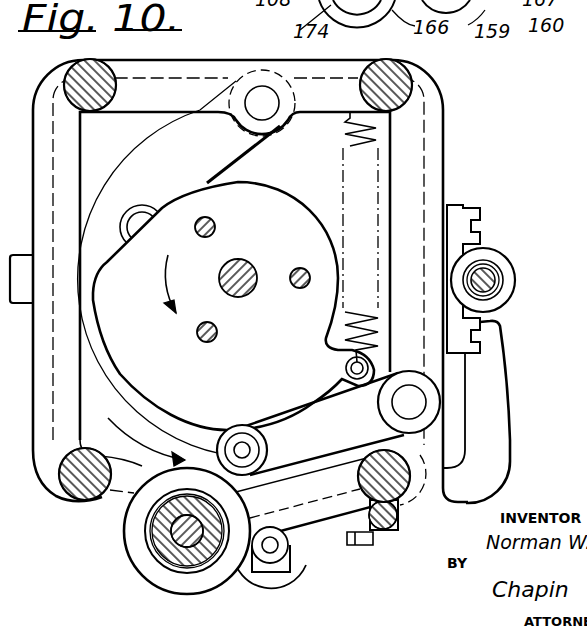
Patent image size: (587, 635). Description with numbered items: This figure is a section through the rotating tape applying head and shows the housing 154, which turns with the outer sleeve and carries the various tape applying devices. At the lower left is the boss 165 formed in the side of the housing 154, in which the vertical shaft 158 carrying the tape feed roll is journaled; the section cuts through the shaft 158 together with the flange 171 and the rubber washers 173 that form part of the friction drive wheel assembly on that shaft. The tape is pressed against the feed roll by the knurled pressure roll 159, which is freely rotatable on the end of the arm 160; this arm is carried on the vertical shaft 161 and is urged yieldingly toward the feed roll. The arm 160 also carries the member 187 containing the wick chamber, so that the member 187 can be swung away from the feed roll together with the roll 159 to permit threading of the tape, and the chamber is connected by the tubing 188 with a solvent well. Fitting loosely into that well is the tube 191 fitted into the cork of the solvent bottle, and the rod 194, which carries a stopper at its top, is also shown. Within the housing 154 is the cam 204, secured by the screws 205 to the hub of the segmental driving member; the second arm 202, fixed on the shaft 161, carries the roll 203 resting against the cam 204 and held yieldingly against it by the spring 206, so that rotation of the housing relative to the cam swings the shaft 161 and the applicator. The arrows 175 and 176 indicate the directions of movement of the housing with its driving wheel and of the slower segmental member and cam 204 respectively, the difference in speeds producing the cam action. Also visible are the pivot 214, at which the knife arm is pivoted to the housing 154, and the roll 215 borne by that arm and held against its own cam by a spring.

The housing 154 is at (425, 170).
The pivot 214 is at (262, 110).
The spring 206 is at (363, 140).
The roll 215 is at (146, 197).
The screws 205 is at (232, 330).
The arrow 176 is at (164, 286).
The cam 204 is at (233, 306).
The arrow 175 is at (116, 400).
The roll 203 is at (245, 412).
The second arm 202 is at (322, 424).
The vertical shaft 161 is at (412, 402).
The tubing 188 is at (490, 456).
The tube 191 is at (490, 268).
The rod 194 is at (499, 289).
The rubber washers 173 is at (163, 533).
The vertical shaft 158 is at (170, 547).
The boss 165 is at (150, 570).
The flange 171 is at (182, 573).
The arm 160 is at (327, 530).
The member 187 is at (378, 535).
The knurled pressure roll 159 is at (297, 562).